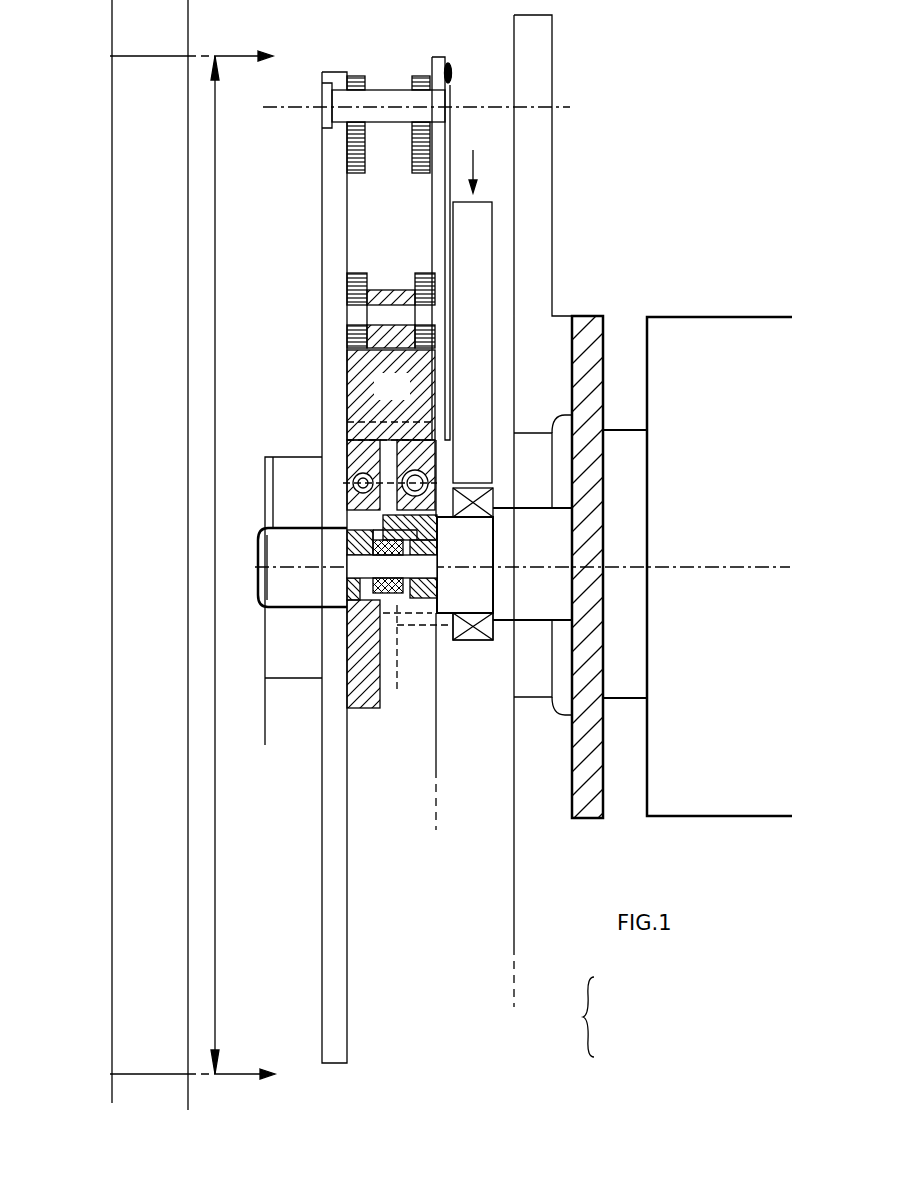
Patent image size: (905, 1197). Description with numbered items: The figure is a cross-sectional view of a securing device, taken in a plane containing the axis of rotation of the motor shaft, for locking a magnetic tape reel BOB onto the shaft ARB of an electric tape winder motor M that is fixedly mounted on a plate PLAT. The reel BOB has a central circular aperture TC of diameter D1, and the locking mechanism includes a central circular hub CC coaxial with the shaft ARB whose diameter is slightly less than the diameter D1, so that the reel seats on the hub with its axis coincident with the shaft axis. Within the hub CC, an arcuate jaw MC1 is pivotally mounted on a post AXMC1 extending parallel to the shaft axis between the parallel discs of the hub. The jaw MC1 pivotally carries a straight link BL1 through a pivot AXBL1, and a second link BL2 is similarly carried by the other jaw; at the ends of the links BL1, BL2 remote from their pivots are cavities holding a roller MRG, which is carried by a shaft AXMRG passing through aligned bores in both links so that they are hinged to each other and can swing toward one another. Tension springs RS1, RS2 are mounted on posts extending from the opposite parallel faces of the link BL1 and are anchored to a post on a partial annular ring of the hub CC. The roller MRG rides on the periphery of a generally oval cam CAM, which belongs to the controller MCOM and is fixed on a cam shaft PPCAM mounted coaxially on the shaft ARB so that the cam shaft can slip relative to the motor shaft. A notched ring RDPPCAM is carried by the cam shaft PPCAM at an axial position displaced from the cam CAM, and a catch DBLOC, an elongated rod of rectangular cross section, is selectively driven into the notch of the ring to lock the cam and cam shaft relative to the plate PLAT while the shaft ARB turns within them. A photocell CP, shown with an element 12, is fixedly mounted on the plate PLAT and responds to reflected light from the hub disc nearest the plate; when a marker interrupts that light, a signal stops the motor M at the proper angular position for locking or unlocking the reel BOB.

The reel BOB is at (110, 37).
The central circular aperture TC is at (128, 157).
The aperture diameter D1 is at (204, 565).
The hub CC is at (322, 216).
The jaw pivot post AXMC1 is at (387, 107).
The jaw MC1 is at (412, 153).
The photocell CP is at (462, 54).
The sensor element 12 is at (451, 72).
The catch DBLOC is at (472, 316).
The plate PLAT is at (552, 115).
The cam CAM is at (390, 462).
The electric tape winder motor M is at (742, 317).
The motor shaft ARB is at (504, 565).
The link BL1 is at (391, 433).
The pivot link AXBL1 is at (391, 310).
The tension spring RS1 is at (352, 474).
The tension spring RS2 is at (430, 481).
The link BL2 is at (362, 690).
The roller shaft AXMRG is at (347, 561).
The roller MRG is at (393, 613).
The cam shaft PPCAM is at (417, 628).
The notched ring RDPPCAM is at (483, 641).
The controller MCOM is at (600, 1017).